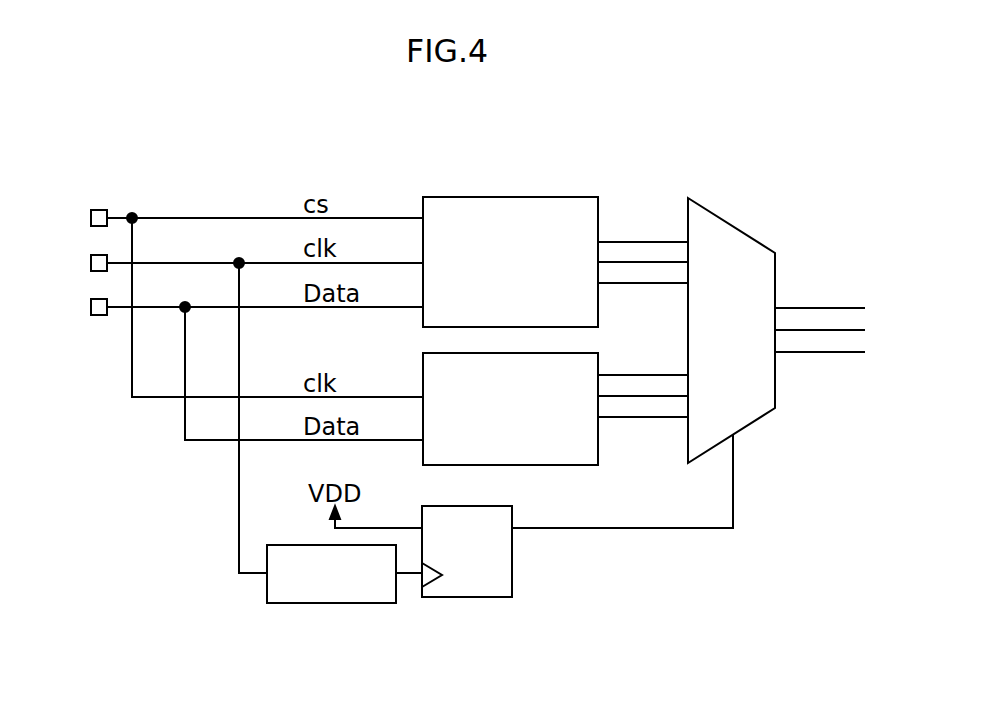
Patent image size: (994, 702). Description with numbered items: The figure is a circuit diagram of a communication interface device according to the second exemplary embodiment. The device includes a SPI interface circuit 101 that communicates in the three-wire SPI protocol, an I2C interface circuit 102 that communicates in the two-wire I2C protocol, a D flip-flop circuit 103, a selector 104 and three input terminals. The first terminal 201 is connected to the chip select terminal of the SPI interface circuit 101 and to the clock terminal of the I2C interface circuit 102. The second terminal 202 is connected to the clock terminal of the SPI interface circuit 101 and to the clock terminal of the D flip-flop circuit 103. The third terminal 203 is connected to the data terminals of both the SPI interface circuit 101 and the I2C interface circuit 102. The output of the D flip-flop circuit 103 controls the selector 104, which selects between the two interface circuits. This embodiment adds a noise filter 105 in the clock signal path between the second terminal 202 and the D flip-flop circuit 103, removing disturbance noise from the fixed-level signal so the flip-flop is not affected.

The SPI interface circuit 101 is at (598, 197).
The I2C interface circuit 102 is at (598, 353).
The D flip-flop circuit 103 is at (512, 516).
The selector 104 is at (752, 236).
The noise filter 105 is at (331, 603).
The first terminal 201 is at (91, 213).
The second terminal 202 is at (91, 258).
The third terminal 203 is at (91, 302).